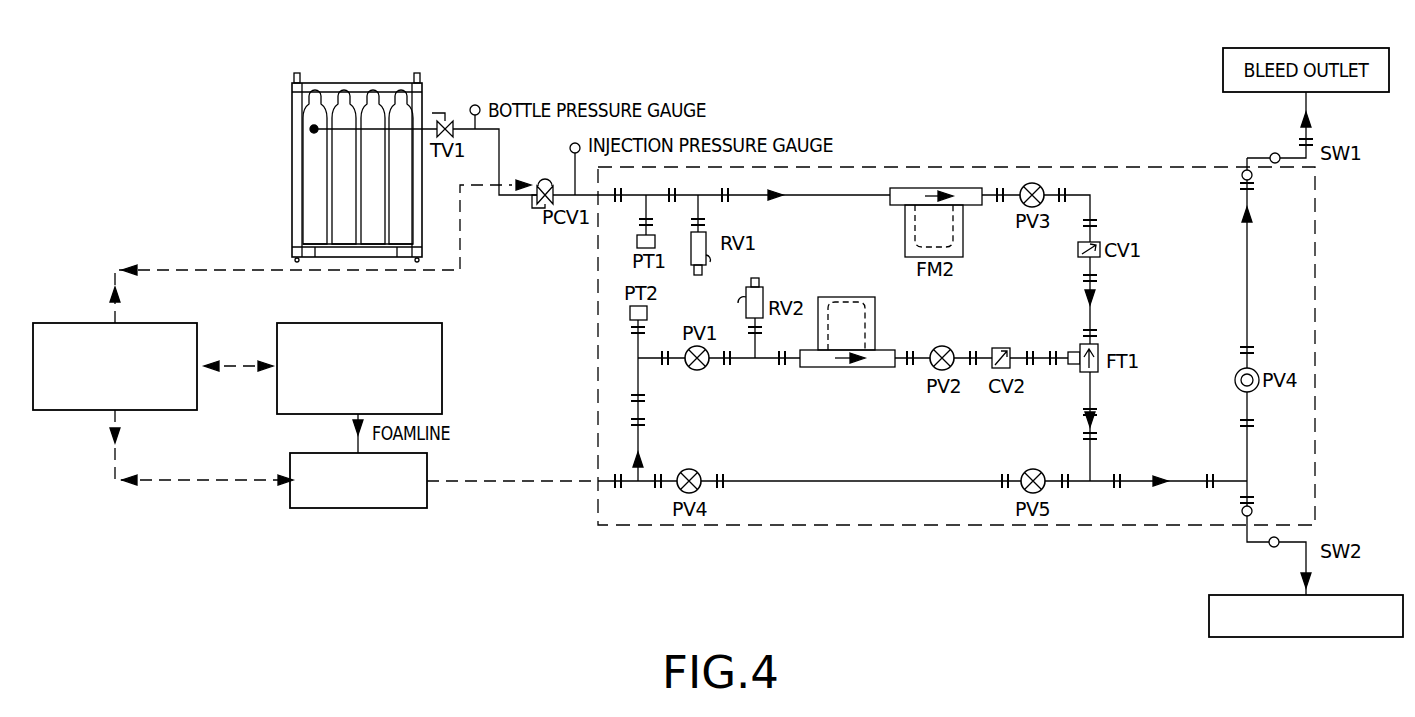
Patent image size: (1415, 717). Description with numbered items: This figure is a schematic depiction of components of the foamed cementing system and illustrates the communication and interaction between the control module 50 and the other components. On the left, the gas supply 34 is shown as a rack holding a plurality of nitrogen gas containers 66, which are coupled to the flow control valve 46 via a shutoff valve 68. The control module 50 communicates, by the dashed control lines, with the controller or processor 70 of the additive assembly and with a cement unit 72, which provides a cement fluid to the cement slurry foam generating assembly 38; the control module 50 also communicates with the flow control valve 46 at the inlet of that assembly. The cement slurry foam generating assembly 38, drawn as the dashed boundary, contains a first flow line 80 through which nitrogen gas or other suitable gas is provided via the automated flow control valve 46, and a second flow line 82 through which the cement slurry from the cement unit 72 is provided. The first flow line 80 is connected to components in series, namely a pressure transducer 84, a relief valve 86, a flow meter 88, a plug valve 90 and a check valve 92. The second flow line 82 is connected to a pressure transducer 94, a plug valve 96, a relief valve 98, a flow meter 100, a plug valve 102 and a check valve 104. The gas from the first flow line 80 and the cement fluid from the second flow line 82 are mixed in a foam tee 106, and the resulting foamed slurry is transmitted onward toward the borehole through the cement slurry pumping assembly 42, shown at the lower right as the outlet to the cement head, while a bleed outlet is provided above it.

The gas supply 34 is at (325, 143).
The nitrogen gas containers 66 is at (316, 177).
The shutoff valve 68 is at (452, 120).
The flow control valve 46 is at (547, 212).
The control module 50 is at (72, 323).
The controller or processor 70 is at (442, 376).
The cement unit 72 is at (427, 498).
The cement slurry foam generating assembly 38 is at (1138, 165).
The first flow line 80 is at (822, 197).
The second flow line 82 is at (740, 360).
The pressure transducer 84 is at (637, 241).
The relief valve 86 is at (707, 242).
The flow meter 88 is at (905, 232).
The plug valve 90 is at (1032, 183).
The check valve 92 is at (1078, 257).
The pressure transducer 94 is at (630, 313).
The plug valve 96 is at (697, 371).
The relief valve 98 is at (763, 292).
The flow meter 100 is at (875, 315).
The plug valve 102 is at (945, 346).
The check valve 104 is at (1005, 348).
The foam tee 106 is at (1098, 352).
The cement slurry pumping assembly 42 is at (1209, 617).